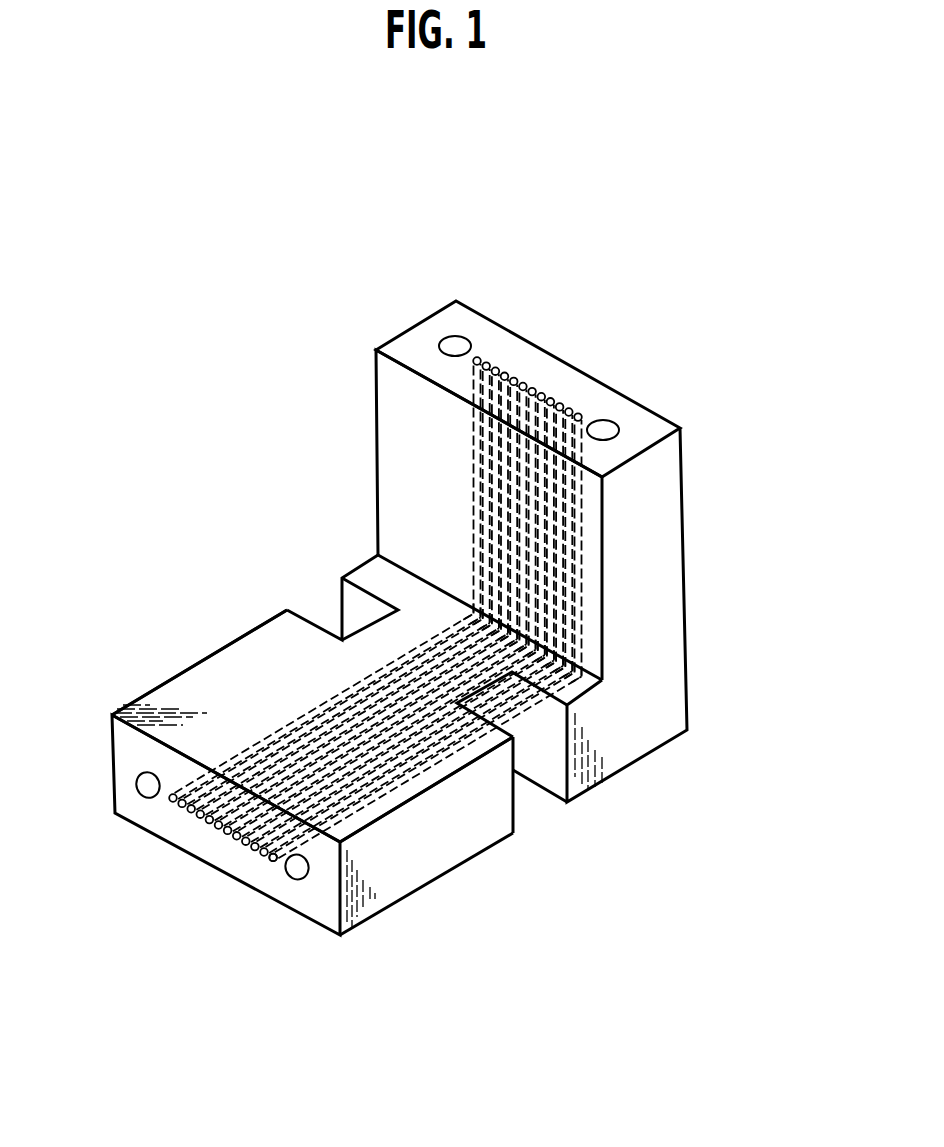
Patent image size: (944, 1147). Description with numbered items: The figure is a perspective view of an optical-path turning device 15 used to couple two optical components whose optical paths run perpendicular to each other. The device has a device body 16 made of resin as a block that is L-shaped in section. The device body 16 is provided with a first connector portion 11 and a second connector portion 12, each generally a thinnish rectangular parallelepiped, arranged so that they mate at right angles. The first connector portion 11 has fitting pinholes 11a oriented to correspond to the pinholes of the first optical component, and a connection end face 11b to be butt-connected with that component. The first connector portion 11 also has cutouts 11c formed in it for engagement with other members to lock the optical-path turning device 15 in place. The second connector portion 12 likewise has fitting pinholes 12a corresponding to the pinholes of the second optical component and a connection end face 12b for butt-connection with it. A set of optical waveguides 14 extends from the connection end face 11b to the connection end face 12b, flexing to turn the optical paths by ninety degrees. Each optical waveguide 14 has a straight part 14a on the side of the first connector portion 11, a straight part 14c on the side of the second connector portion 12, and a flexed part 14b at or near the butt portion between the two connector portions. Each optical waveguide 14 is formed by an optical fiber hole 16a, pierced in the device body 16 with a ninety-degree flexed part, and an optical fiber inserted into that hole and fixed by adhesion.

The optical-path turning device 15 is at (616, 284).
The first connector portion 11 is at (188, 687).
The fitting pinholes 11a is at (150, 787).
The connection end face 11b is at (184, 832).
The cutouts 11c is at (362, 610).
The second connector portion 12 is at (392, 456).
The fitting pinholes 12a is at (453, 338).
The connection end face 12b is at (527, 353).
The optical waveguides 14 is at (472, 658).
The straight part 14a is at (380, 791).
The flexed part 14b is at (585, 653).
The straight part 14c is at (585, 545).
The device body 16 is at (243, 650).
The optical fiber hole 16a is at (445, 761).